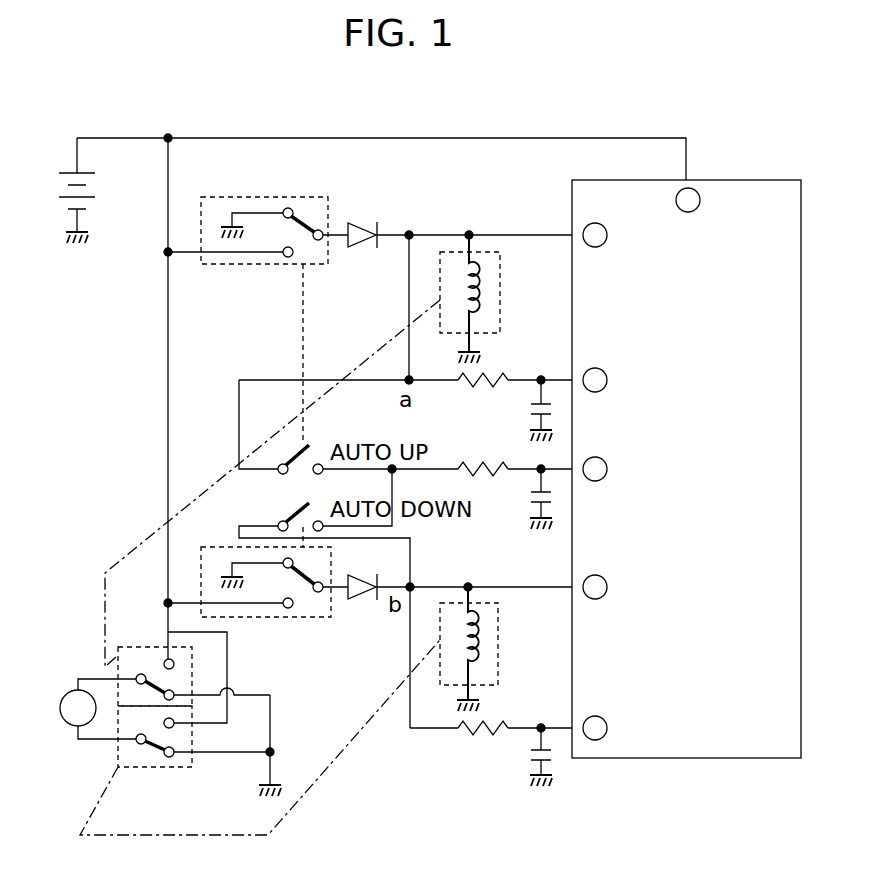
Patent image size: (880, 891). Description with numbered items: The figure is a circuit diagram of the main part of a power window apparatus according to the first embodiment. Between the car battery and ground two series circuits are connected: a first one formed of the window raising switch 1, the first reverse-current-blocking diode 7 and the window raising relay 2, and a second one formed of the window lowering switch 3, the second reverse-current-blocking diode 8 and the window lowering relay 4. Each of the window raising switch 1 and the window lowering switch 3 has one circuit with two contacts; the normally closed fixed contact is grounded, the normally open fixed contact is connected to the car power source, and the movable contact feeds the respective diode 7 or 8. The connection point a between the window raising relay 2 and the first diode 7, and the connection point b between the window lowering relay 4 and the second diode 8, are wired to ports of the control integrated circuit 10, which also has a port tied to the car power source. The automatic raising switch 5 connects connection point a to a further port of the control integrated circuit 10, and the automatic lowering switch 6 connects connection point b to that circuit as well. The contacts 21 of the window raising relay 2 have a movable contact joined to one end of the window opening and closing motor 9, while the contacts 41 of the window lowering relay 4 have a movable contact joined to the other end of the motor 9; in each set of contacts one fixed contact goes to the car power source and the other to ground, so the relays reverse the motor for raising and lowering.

The window raising switch 1 is at (302, 197).
The window raising relay 2 is at (492, 252).
The window lowering switch 3 is at (317, 617).
The window lowering relay 4 is at (486, 603).
The automatic raising switch 5 is at (300, 481).
The automatic lowering switch 6 is at (288, 504).
The first reverse-current-blocking diode 7 is at (368, 218).
The second reverse-current-blocking diode 8 is at (362, 600).
The window opening and closing motor 9 is at (65, 691).
The control integrated circuit 10 is at (757, 180).
The contacts of the window raising relay 21 is at (145, 647).
The contacts of the window lowering relay 41 is at (168, 767).